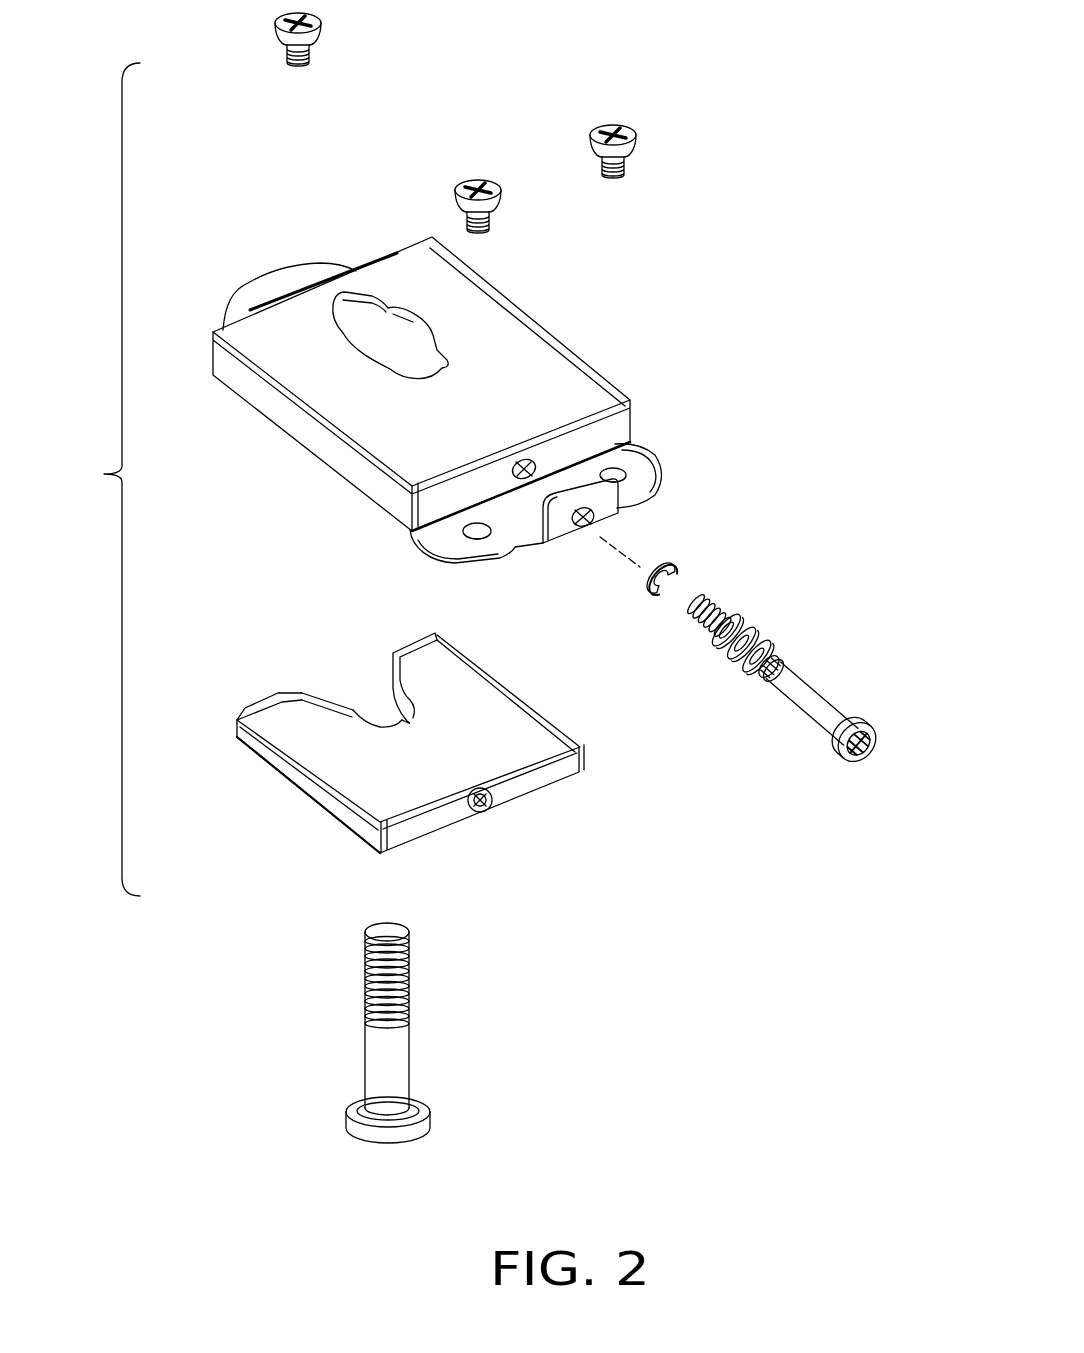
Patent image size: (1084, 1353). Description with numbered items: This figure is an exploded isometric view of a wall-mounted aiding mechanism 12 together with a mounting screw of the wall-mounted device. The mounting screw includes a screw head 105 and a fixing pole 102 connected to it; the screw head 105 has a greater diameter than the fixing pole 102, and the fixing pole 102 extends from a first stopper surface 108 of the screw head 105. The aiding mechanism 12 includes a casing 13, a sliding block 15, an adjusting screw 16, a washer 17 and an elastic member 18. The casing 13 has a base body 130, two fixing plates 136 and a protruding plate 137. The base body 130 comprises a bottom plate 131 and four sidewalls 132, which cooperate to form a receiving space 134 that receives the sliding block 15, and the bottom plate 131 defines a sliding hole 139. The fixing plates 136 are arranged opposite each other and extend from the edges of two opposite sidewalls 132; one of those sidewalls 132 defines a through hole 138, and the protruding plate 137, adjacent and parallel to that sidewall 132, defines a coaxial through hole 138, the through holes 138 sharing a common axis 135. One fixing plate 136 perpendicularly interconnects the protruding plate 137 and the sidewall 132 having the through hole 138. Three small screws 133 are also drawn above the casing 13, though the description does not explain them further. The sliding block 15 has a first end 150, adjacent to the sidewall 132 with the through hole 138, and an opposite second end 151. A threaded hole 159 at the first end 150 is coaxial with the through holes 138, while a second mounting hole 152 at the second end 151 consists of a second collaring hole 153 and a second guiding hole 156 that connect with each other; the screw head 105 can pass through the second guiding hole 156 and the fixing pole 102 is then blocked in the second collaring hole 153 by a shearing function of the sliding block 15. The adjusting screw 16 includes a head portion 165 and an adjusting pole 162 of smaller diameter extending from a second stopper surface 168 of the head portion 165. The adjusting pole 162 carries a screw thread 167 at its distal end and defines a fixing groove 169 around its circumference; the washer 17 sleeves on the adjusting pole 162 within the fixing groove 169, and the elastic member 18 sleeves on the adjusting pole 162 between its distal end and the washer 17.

The wall-mounted aiding mechanism 12 is at (101, 479).
The casing 13 is at (247, 202).
The base body 130 is at (178, 413).
The bottom plate 131 is at (338, 400).
The sidewalls 132 is at (268, 400).
The screws 133 is at (622, 128).
The receiving space 134 is at (352, 316).
The common axis 135 is at (633, 441).
The fixing plates 136 is at (262, 300).
The protruding plate 137 is at (608, 497).
The through hole 138 is at (526, 480).
The sliding hole 139 is at (403, 325).
The sliding block 15 is at (264, 812).
The first end 150 is at (543, 775).
The second end 151 is at (260, 700).
The second mounting hole 152 is at (295, 592).
The second collaring hole 153 is at (377, 716).
The second guiding hole 156 is at (370, 680).
The threaded hole 159 is at (492, 809).
The adjusting screw 16 is at (758, 706).
The adjusting pole 162 is at (807, 700).
The head portion 165 is at (850, 725).
The screw thread 167 is at (707, 603).
The second stopper surface 168 is at (838, 745).
The fixing groove 169 is at (773, 653).
The washer 17 is at (668, 560).
The elastic member 18 is at (712, 647).
The fixing pole 102 is at (398, 1037).
The screw head 105 is at (413, 1128).
The first stopper surface 108 is at (418, 1100).